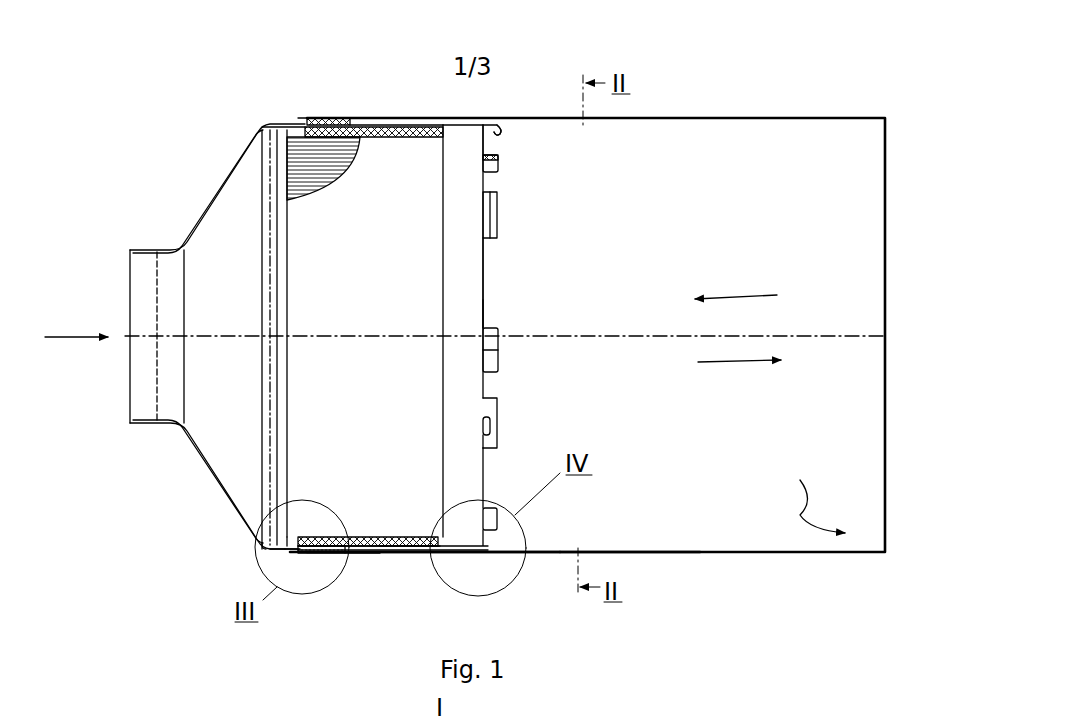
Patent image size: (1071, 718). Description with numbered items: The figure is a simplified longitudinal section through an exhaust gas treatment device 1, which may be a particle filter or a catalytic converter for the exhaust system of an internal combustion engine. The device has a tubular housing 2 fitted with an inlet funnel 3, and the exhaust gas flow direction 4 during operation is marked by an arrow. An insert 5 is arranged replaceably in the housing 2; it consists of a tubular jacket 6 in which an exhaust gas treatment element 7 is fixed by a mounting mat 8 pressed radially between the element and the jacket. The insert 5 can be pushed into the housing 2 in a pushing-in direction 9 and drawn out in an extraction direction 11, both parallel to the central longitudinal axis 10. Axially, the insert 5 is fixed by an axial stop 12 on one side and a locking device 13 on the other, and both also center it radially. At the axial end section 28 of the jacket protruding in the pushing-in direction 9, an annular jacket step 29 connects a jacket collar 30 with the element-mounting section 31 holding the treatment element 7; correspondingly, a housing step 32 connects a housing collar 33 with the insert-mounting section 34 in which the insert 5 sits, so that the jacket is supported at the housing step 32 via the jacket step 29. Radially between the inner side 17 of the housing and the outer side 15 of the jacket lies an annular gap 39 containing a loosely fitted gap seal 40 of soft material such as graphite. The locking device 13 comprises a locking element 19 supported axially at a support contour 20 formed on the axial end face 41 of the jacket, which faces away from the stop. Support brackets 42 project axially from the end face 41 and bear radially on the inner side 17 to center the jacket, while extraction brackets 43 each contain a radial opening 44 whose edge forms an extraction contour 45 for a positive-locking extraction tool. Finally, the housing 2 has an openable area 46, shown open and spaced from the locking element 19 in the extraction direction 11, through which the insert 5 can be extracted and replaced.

The exhaust gas treatment device 1 is at (694, 556).
The tubular housing 2 is at (634, 119).
The inlet funnel 3 is at (238, 523).
The exhaust gas flow direction 4 is at (72, 335).
The insert 5 is at (495, 285).
The tubular jacket 6 is at (457, 120).
The exhaust gas treatment element 7 is at (407, 150).
The mounting mat 8 is at (362, 137).
The pushing-in direction 9 is at (738, 295).
The central longitudinal axis 10 is at (645, 336).
The extraction direction 11 is at (742, 365).
The axial stop 12 is at (298, 116).
The locking device 13 is at (525, 155).
The outer side of the jacket 15 is at (447, 557).
The inner side of the housing 17 is at (605, 550).
The locking element 19 is at (502, 165).
The support contour 20 is at (484, 312).
The axial end section of the jacket 28 is at (293, 568).
The jacket step 29 is at (300, 545).
The jacket collar 30 is at (268, 545).
The element-mounting section 31 is at (386, 545).
The housing step 32 is at (283, 554).
The housing collar 33 is at (266, 552).
The insert-mounting section 34 is at (365, 553).
The annular gap 39 is at (368, 537).
The gap seal 40 is at (343, 555).
The axial end face of the jacket 41 is at (484, 262).
The support bracket 42 is at (497, 212).
The extraction bracket 43 is at (505, 128).
The radial opening 44 is at (489, 430).
The extraction contour 45 is at (485, 422).
The openable area of the housing 46 is at (806, 488).